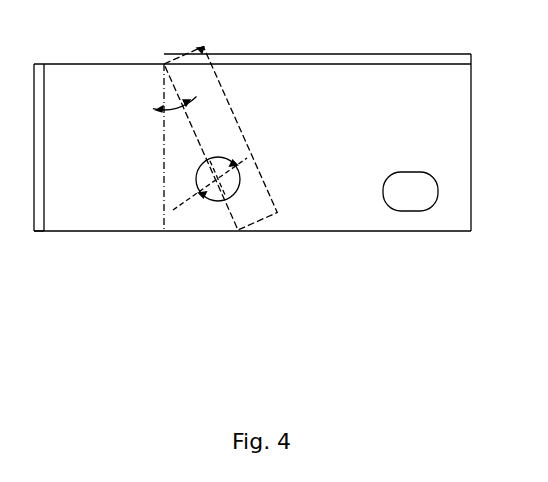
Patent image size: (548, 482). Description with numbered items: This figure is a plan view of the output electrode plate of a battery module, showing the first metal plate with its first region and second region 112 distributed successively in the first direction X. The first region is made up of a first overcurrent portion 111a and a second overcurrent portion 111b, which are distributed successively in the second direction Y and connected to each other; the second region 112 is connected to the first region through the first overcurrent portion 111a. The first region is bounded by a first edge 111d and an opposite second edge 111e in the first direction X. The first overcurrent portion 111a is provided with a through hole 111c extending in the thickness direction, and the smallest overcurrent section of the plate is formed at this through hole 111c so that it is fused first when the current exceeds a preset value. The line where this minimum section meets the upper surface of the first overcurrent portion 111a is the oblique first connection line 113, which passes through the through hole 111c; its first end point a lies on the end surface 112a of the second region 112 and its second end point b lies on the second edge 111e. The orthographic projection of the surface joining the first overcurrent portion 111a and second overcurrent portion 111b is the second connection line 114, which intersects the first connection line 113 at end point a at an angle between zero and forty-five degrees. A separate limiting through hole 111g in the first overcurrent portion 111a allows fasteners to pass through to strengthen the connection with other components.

The first overcurrent portion 111a is at (460, 115).
The second overcurrent portion 111b is at (77, 85).
The through hole 111c is at (213, 200).
The first edge 111d is at (120, 62).
The second edge 111e is at (330, 233).
The limiting through hole 111g is at (405, 207).
The second region 112 is at (390, 58).
The end surface 112a is at (163, 63).
The first connection line 113 is at (230, 204).
The second connection line 114 is at (163, 197).